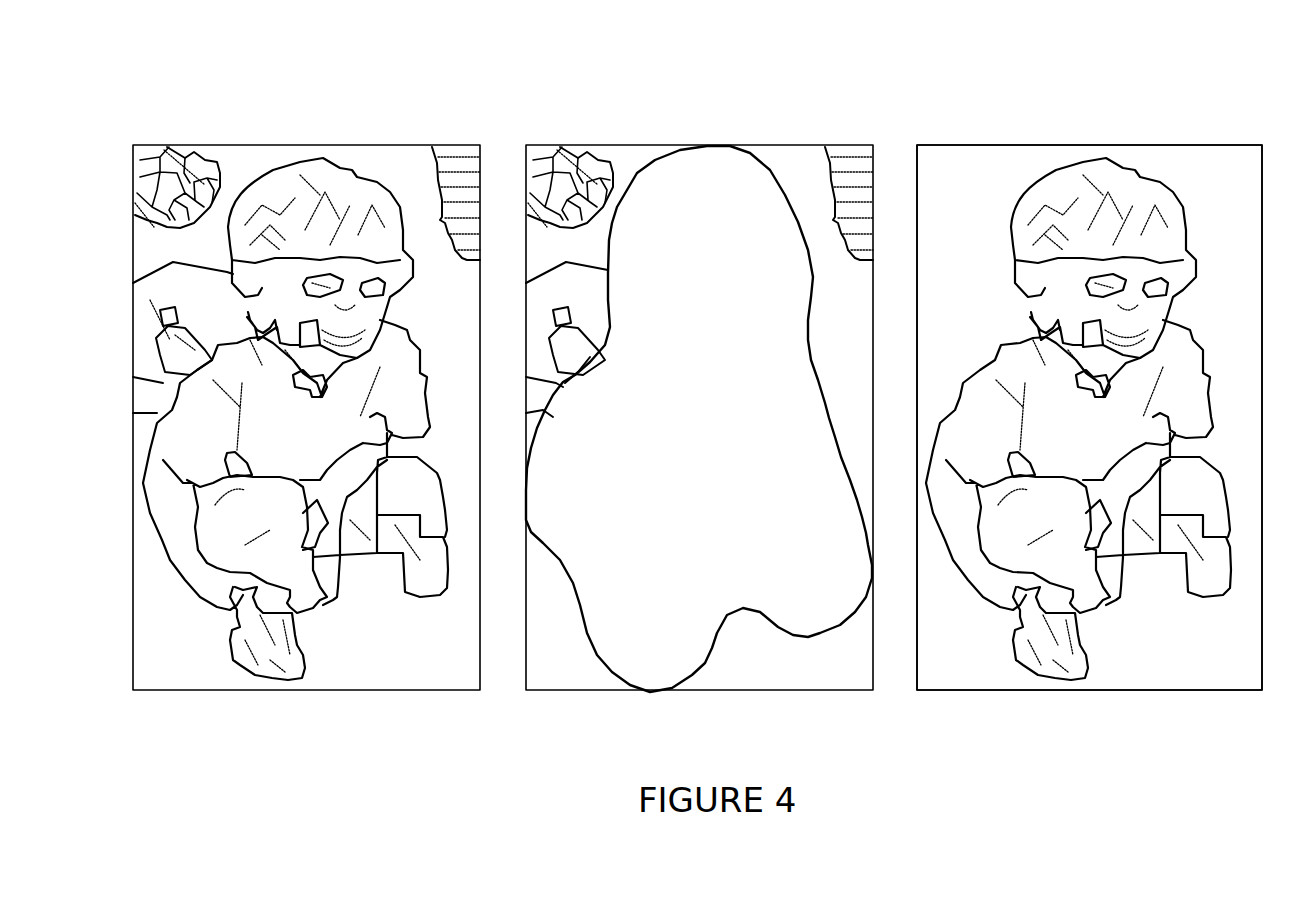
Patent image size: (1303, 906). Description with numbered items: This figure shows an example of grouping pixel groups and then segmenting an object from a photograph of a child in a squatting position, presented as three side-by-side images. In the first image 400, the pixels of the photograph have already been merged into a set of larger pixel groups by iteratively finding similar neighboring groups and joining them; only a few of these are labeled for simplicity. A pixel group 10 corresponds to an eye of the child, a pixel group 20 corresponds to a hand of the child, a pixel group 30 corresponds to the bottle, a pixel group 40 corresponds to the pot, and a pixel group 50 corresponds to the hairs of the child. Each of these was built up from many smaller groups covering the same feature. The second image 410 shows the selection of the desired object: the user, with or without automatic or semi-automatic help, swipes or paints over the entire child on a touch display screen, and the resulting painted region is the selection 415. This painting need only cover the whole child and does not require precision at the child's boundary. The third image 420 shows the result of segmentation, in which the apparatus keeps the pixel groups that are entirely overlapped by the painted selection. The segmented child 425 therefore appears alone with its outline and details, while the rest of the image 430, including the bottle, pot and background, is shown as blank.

The pixel group 10 is at (317, 287).
The pixel group 20 is at (190, 563).
The pixel group 30 is at (170, 260).
The pixel group 40 is at (457, 167).
The pixel group 50 is at (350, 177).
The image 400 is at (266, 145).
The image 410 is at (629, 145).
The painting (selection) of the child 415 is at (748, 187).
The image 420 is at (1082, 145).
The child 425 is at (1178, 330).
The rest of the image 430 is at (1202, 187).